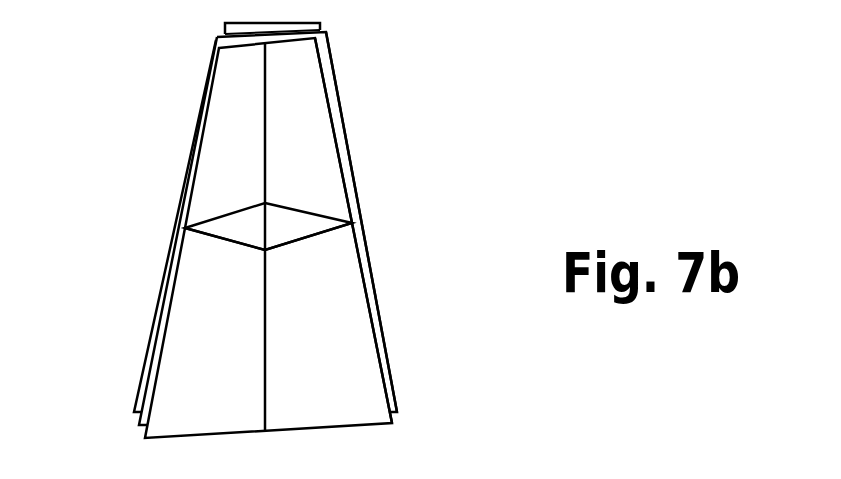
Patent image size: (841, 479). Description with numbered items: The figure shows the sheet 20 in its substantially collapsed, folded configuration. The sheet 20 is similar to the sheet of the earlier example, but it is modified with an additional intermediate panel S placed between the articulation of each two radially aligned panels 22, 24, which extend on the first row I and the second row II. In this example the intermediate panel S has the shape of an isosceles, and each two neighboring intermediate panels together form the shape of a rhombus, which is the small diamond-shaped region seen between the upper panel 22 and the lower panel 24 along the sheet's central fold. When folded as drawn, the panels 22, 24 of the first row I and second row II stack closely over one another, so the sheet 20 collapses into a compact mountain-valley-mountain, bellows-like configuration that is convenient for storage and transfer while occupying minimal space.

The sheet 20 is at (372, 120).
The radially aligned panel (first row) 22 is at (228, 148).
The radially aligned panel (second row) 24 is at (223, 352).
The intermediate panel S is at (242, 225).
The second row II is at (358, 167).
The first row I is at (387, 342).